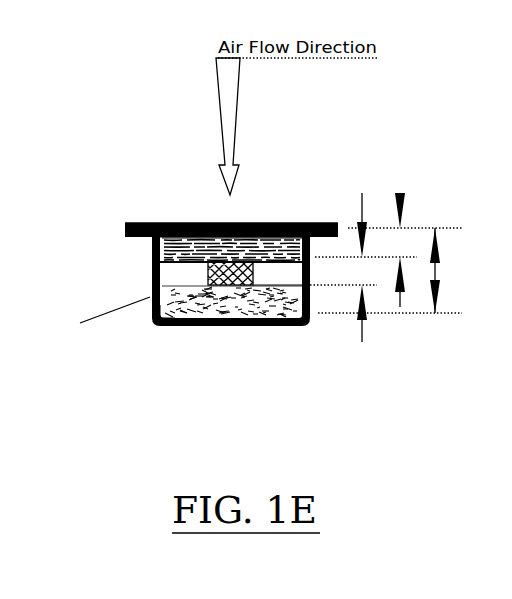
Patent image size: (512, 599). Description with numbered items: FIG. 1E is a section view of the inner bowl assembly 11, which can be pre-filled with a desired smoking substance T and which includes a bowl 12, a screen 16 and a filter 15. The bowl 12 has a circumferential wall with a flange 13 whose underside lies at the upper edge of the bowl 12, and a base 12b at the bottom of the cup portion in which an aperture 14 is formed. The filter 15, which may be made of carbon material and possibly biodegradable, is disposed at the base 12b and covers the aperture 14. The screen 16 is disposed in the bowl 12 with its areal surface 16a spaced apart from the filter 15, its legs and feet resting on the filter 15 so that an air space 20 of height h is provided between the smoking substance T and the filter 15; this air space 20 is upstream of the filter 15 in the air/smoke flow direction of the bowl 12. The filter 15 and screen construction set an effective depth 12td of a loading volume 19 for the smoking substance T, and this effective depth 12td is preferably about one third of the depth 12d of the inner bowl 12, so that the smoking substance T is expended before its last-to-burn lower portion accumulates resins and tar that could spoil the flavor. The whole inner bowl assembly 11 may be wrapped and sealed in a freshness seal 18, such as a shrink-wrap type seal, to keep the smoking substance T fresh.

The inner bowl assembly 11 is at (73, 339).
The bowl 12 is at (152, 253).
The base 12b is at (282, 322).
The effective depth 12td is at (400, 193).
The depth 12d is at (406, 270).
The flange 13 is at (130, 223).
The smoking substance T is at (172, 236).
The aperture 14 is at (226, 314).
The filter 15 is at (155, 315).
The screen 16 is at (208, 270).
The areal surface 16a is at (213, 247).
The freshness seal 18 is at (262, 225).
The loading volume 19 is at (286, 227).
The air space 20 is at (282, 275).
The height h is at (343, 267).